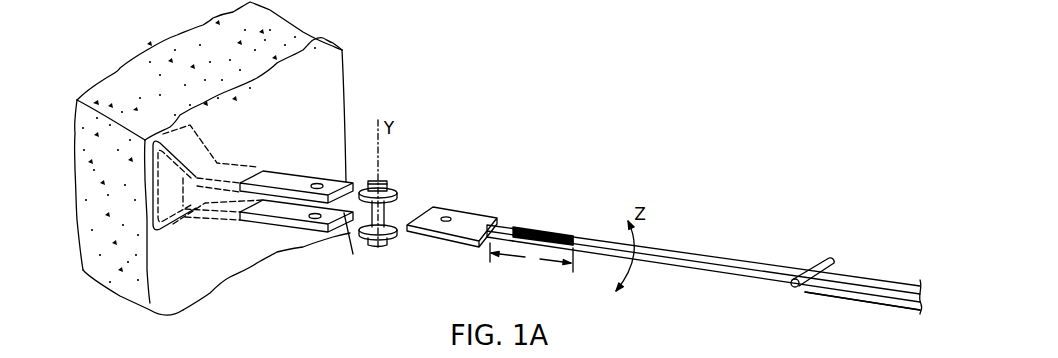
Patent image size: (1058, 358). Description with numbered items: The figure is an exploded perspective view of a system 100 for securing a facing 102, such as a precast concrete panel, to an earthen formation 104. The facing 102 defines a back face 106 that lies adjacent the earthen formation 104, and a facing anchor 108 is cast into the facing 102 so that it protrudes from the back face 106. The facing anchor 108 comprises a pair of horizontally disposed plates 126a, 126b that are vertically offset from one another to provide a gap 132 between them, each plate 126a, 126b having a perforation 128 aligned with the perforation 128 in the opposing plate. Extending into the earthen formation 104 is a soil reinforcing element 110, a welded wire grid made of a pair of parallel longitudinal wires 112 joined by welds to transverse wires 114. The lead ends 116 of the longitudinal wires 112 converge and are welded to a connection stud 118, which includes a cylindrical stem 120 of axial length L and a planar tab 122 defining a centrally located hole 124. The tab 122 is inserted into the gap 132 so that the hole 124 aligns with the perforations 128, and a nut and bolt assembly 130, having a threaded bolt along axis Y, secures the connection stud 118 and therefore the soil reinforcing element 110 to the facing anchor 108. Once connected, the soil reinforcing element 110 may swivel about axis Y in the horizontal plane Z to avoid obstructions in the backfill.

The system 100 is at (566, 148).
The facing 102 is at (327, 68).
The earthen formation 104 is at (775, 203).
The back face 106 is at (243, 130).
The facing anchor 108 is at (215, 198).
The soil reinforcing element 110 is at (640, 245).
The longitudinal wire 112 is at (880, 297).
The transverse wire 114 is at (803, 286).
The lead end 116 is at (531, 252).
The connection stud 118 is at (508, 226).
The stem 120 is at (560, 235).
The tab 122 is at (473, 212).
The hole 124 is at (447, 218).
The plate 126a is at (283, 175).
The plate 126b is at (267, 213).
The perforation 128 is at (318, 186).
The nut and bolt assembly 130 is at (385, 181).
The gap 132 is at (344, 213).